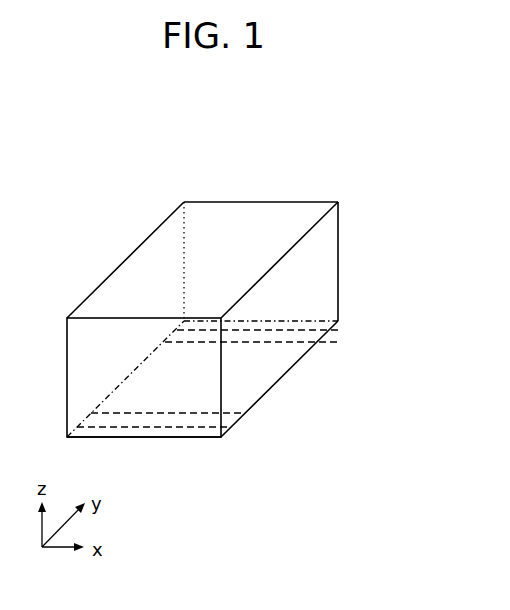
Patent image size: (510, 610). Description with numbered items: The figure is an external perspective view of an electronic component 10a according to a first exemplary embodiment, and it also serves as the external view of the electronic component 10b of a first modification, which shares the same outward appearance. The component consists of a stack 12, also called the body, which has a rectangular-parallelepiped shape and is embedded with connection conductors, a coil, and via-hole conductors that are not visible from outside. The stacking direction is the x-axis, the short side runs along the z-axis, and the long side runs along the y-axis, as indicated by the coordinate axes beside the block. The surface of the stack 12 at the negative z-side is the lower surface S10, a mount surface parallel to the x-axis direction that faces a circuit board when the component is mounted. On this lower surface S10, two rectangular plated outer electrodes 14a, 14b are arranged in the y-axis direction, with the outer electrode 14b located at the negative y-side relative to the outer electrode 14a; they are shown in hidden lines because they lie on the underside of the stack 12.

The electronic component 10a is at (200, 155).
The electronic component 10b is at (202, 319).
The stack 12 is at (338, 202).
The outer electrode 14a is at (302, 337).
The outer electrode 14b is at (233, 420).
The lower surface S10 is at (172, 407).